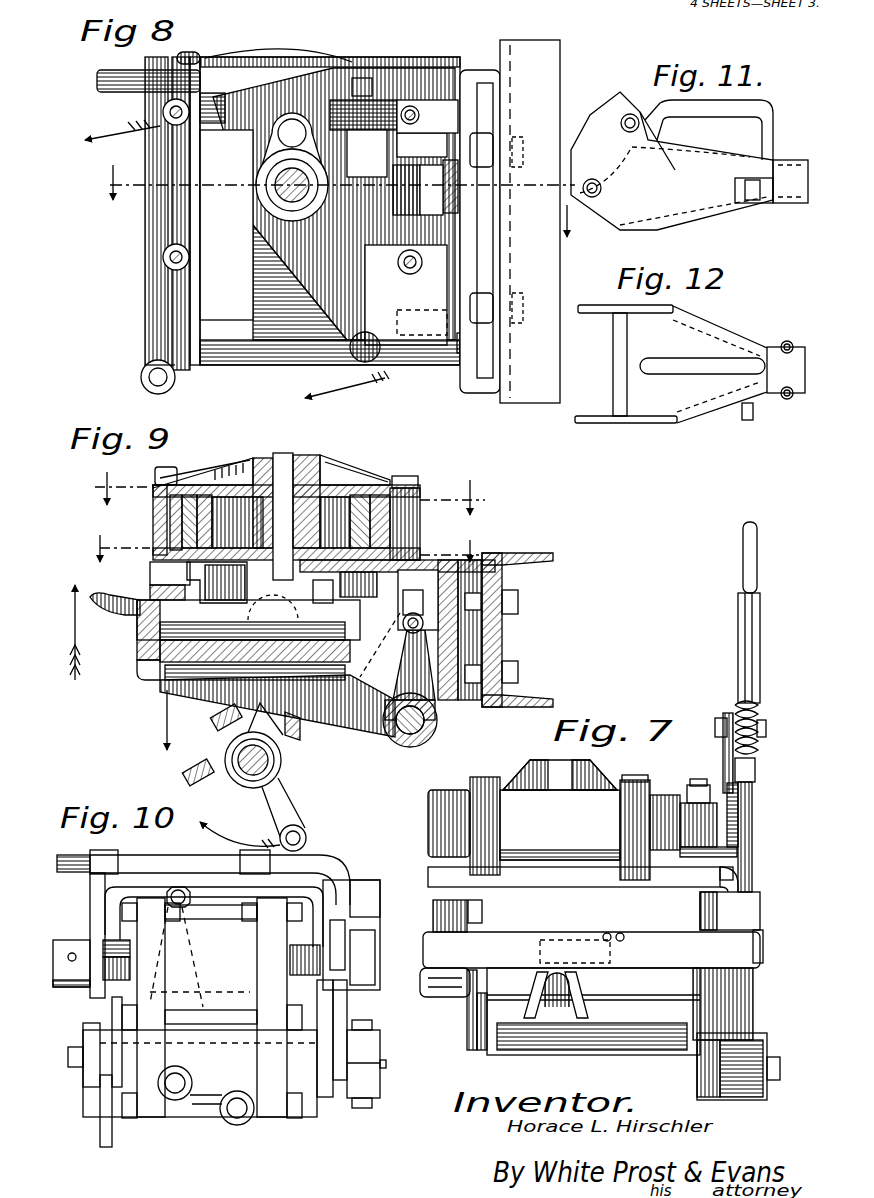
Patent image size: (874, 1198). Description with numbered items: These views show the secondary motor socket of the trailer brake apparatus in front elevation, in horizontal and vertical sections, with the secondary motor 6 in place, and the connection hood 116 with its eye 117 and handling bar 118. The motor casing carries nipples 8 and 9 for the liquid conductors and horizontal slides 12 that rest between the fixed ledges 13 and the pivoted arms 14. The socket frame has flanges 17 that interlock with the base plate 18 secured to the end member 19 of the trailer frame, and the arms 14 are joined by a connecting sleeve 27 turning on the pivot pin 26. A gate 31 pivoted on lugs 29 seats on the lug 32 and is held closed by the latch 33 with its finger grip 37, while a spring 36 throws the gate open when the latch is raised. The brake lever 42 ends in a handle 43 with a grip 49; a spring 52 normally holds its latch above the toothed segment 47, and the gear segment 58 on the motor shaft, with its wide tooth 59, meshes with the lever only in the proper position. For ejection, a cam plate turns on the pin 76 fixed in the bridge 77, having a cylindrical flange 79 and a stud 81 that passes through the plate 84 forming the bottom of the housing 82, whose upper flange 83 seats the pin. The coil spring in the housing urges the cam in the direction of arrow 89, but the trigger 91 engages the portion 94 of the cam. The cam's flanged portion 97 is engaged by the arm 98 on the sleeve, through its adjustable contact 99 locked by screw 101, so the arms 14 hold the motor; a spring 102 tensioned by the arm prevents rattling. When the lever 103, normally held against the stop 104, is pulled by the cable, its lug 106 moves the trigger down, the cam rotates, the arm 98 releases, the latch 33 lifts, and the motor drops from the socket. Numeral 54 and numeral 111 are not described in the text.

In FIG. 9, the secondary motor 6 is at (289, 489).
In FIG. 10, the secondary motor 6 is at (232, 1071).
In FIG. 9, the nipple 8 is at (288, 545).
In FIG. 8, the nipple 9 is at (338, 208).
In FIG. 9, the horizontal slide 12 is at (137, 655).
In FIG. 10, the horizontal slide 12 is at (108, 953).
In FIG. 8, the fixed ledge 13 is at (354, 240).
In FIG. 9, the fixed ledge 13 is at (180, 642).
In FIG. 10, the fixed ledge 13 is at (103, 930).
In FIG. 9, the pivoted arm 14 is at (210, 695).
In FIG. 10, the pivoted arm 14 is at (305, 985).
In FIG. 7, the pivoted arm 14 is at (500, 983).
In FIG. 8, the flange 17 is at (483, 90).
In FIG. 9, the flange 17 is at (470, 630).
In FIG. 8, the base plate 18 is at (497, 200).
In FIG. 9, the base plate 18 is at (502, 580).
In FIG. 8, the end member 19 is at (540, 385).
In FIG. 9, the end member 19 is at (505, 633).
In FIG. 9, the pivot pin 26 is at (397, 740).
In FIG. 9, the connecting sleeve 27 is at (437, 730).
In FIG. 7, the connecting sleeve 27 is at (617, 1048).
In FIG. 8, the lug 29 is at (178, 366).
In FIG. 8, the gate 31 is at (145, 262).
In FIG. 9, the gate 31 is at (137, 630).
In FIG. 7, the gate 31 is at (591, 934).
In FIG. 9, the lug 32 is at (143, 675).
In FIG. 7, the lug 32 is at (565, 825).
In FIG. 9, the latch 33 is at (136, 600).
In FIG. 7, the latch 33 is at (425, 935).
In FIG. 7, the spring 36 is at (755, 927).
In FIG. 8, the finger grip 37 is at (124, 92).
In FIG. 7, the lever 42 is at (750, 1020).
In FIG. 7, the handle 43 is at (757, 550).
In FIG. 7, the toothed segment 47 is at (750, 800).
In FIG. 7, the grip 49 is at (760, 635).
In FIG. 7, the spring 52 is at (758, 750).
In FIG. 7, the nut 54 is at (723, 763).
In FIG. 10, the gear segment 58 is at (380, 1092).
In FIG. 10, the tooth 59 is at (383, 1066).
In FIG. 9, the pin 76 is at (285, 473).
In FIG. 8, the bridge 77 is at (256, 296).
In FIG. 9, the bridge 77 is at (323, 614).
In FIG. 7, the bridge 77 is at (610, 889).
In FIG. 8, the cylindrical flange 79 is at (272, 192).
In FIG. 8, the stud 81 is at (292, 133).
In FIG. 9, the housing 82 is at (152, 520).
In FIG. 9, the flange 83 is at (320, 460).
In FIG. 9, the plate 84 is at (223, 552).
In FIG. 8, the arrow 89 is at (347, 386).
In FIG. 8, the trigger 91 is at (363, 83).
In FIG. 9, the trigger 91 is at (296, 725).
In FIG. 8, the portion of the cam 94 is at (290, 72).
In FIG. 9, the flanged portion 97 is at (398, 613).
In FIG. 9, the arm 98 is at (420, 588).
In FIG. 10, the arm 98 is at (187, 930).
In FIG. 7, the arm 98 is at (582, 981).
In FIG. 8, the adjustable contact 99 is at (420, 276).
In FIG. 9, the adjustable contact 99 is at (400, 633).
In FIG. 9, the screw 101 is at (413, 637).
In FIG. 8, the spring 102 is at (440, 197).
In FIG. 9, the lever 103 is at (283, 798).
In FIG. 10, the lever 103 is at (100, 1118).
In FIG. 9, the stop 104 is at (233, 720).
In FIG. 10, the lug 106 is at (90, 990).
In FIG. 8, the base bar 111 is at (332, 358).
In FIG. 11, the hood 116 is at (690, 203).
In FIG. 11, the eye 117 is at (757, 195).
In FIG. 12, the eye 117 is at (747, 422).
In FIG. 11, the bar 118 is at (775, 112).
In FIG. 12, the bar 118 is at (690, 366).